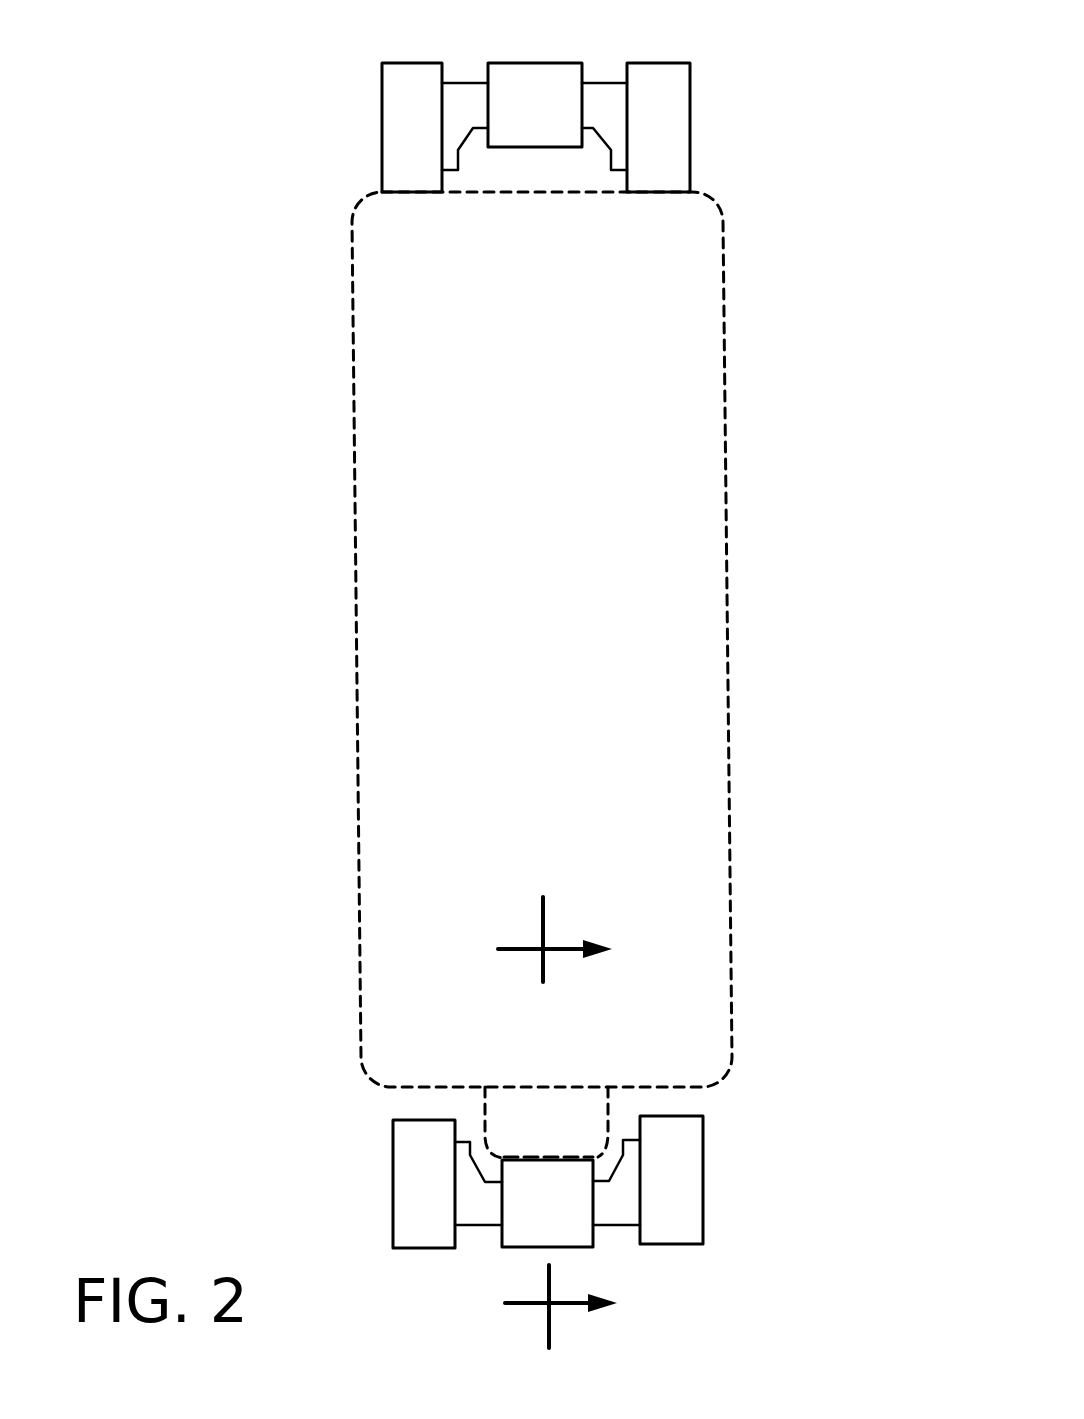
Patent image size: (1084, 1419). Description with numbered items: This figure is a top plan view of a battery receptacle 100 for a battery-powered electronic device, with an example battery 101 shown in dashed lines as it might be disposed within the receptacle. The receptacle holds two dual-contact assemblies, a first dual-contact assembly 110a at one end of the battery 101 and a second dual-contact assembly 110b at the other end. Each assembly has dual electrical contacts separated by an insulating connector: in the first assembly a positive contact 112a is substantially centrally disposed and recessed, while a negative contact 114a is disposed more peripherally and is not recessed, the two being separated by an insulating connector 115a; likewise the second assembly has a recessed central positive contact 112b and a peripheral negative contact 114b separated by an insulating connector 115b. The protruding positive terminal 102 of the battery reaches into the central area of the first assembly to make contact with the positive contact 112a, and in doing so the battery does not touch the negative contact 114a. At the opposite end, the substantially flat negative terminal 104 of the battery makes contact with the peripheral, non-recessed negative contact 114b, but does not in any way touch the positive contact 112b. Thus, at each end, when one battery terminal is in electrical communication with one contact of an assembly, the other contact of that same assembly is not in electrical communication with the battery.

The battery receptacle 100 is at (178, 111).
The battery 101 is at (738, 509).
The protruding positive terminal 102 is at (577, 1115).
The negative terminal 104 is at (472, 184).
The first dual-contact assembly 110a is at (787, 1150).
The second dual-contact assembly 110b is at (818, 172).
The positive contact 112a is at (587, 1227).
The positive contact 112b is at (531, 148).
The negative contact 114a is at (408, 1208).
The negative contact 114b is at (400, 157).
The insulating connector 115a is at (479, 1228).
The insulating connector 115b is at (606, 138).